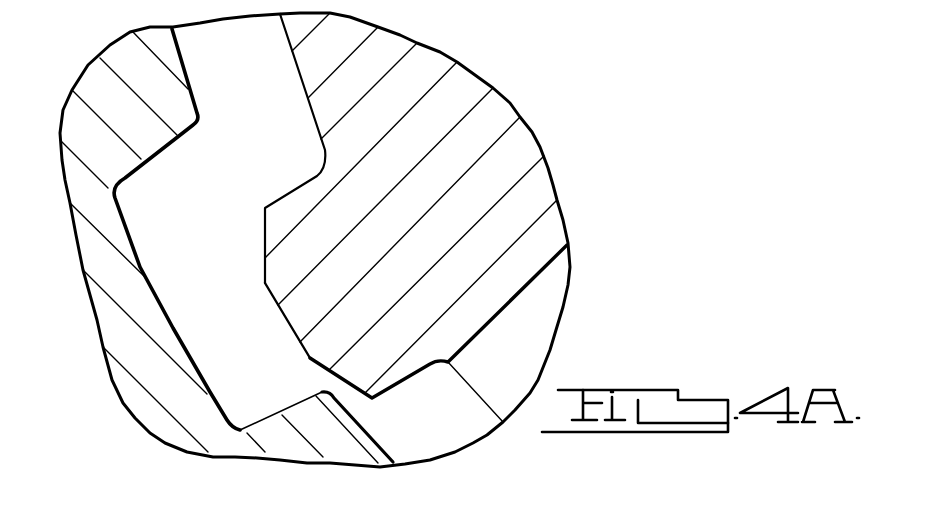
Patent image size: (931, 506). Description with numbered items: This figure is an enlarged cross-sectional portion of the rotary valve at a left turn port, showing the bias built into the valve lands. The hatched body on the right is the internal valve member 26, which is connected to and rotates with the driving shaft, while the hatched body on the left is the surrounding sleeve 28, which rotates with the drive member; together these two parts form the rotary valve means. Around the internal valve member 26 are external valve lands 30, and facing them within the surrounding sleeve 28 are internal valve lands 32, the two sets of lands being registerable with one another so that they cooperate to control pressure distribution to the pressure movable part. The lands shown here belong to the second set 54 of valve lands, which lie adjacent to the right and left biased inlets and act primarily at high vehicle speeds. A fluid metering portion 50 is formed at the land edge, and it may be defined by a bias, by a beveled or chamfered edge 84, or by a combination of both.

The internal valve member 26 is at (518, 153).
The surrounding sleeve 28 is at (112, 302).
The internal valve lands 32 is at (135, 240).
The external valve lands 30 is at (267, 283).
The second set of valve lands 54 is at (290, 324).
The beveled or chamfered edge 84 is at (345, 378).
The fluid metering portions 50 is at (337, 382).